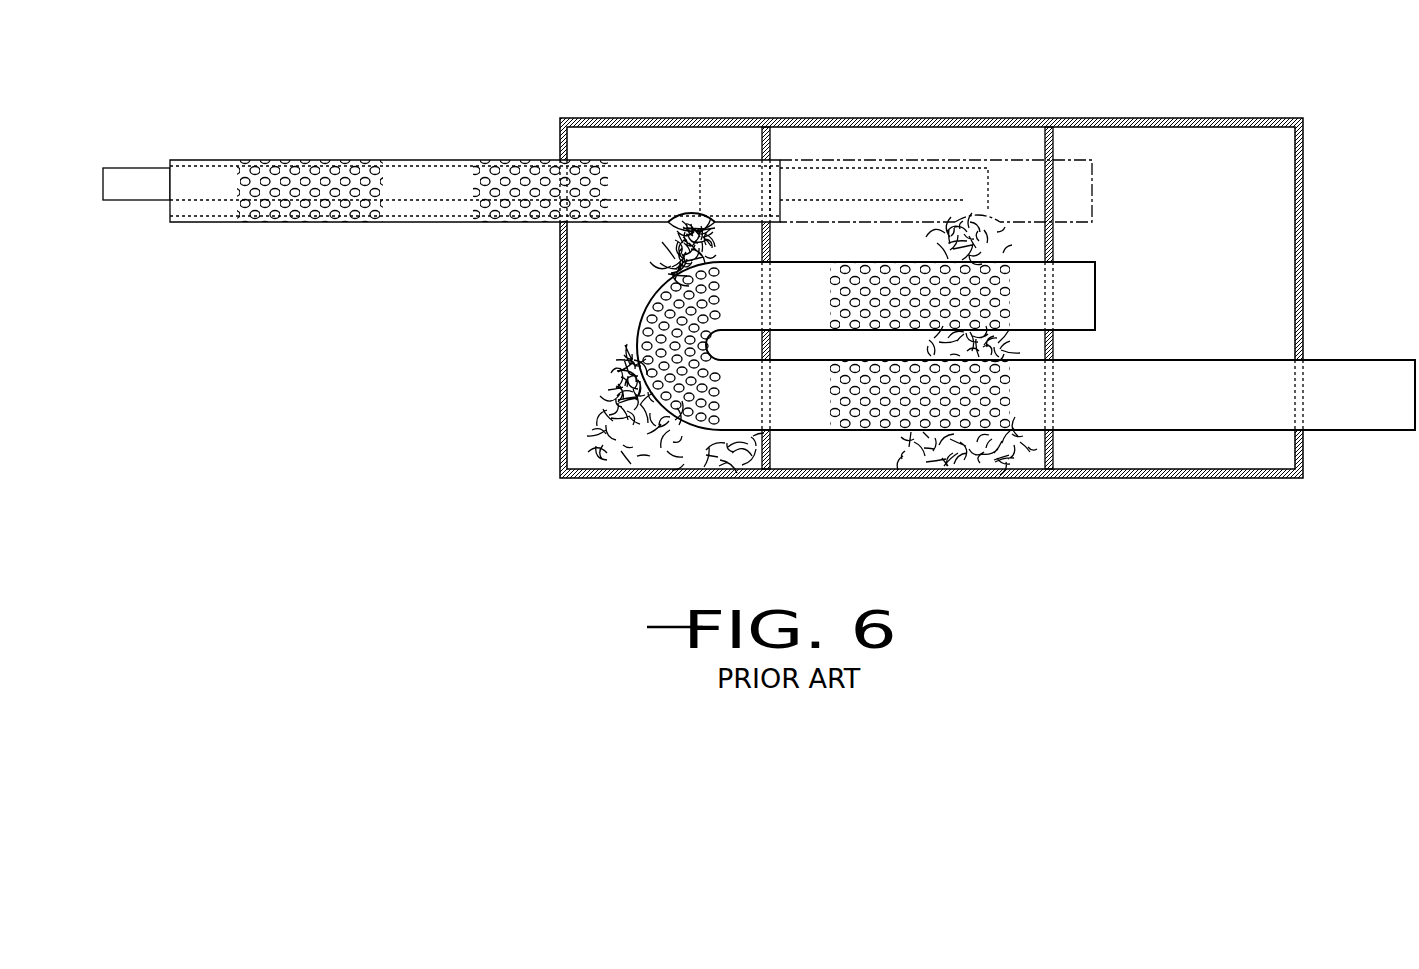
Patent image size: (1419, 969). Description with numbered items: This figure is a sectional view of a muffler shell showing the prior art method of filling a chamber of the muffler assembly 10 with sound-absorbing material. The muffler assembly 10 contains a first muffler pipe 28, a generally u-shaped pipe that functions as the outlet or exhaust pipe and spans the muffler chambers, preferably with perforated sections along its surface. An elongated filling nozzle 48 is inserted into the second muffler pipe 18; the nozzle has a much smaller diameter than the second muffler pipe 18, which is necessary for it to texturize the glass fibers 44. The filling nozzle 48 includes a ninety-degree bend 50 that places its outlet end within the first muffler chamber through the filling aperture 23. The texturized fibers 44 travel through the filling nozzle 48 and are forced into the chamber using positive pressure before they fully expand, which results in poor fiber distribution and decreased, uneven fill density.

The muffler assembly 10 is at (928, 118).
The second muffler pipe 18 is at (597, 136).
The filling aperture 23 is at (700, 212).
The first muffler pipe 28 is at (1155, 430).
The fibers 44 is at (648, 436).
The filling nozzle 48 is at (400, 176).
The 90° bend 50 is at (640, 164).